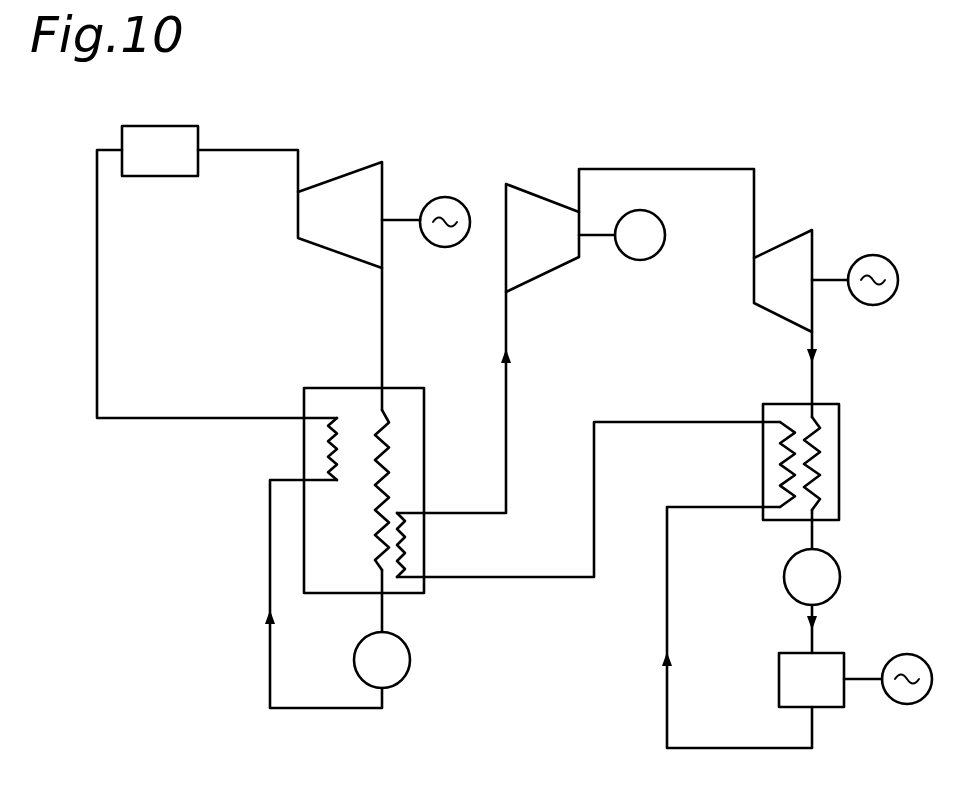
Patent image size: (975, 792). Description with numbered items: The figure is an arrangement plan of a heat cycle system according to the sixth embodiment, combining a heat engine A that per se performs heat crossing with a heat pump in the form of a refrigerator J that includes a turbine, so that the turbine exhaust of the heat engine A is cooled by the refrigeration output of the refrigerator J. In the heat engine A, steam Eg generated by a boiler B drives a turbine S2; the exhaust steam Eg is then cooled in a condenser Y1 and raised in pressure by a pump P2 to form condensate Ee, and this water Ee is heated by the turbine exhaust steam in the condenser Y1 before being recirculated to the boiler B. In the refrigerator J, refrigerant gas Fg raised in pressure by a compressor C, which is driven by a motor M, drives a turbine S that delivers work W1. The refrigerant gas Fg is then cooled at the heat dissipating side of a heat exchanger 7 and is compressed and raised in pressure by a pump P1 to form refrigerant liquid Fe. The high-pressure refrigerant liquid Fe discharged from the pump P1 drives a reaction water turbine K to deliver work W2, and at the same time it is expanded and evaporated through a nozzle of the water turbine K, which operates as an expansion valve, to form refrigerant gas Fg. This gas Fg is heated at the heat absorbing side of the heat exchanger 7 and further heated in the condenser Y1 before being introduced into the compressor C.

The heat engine A is at (285, 132).
The refrigerator J is at (680, 149).
The boiler B is at (160, 151).
The steam Eg is at (248, 154).
The turbine S2 is at (340, 215).
The condenser Y1 is at (424, 458).
The water (feedwater or condensate) Ee is at (302, 594).
The pump P2 is at (382, 660).
The compressor C is at (542, 238).
The motor M is at (640, 235).
The refrigerant gas Fg is at (607, 441).
The turbine S is at (783, 281).
The work (output) W1 is at (855, 271).
The heat exchanger 7 is at (839, 463).
The pump P1 is at (812, 577).
The refrigerant liquid Fe is at (793, 629).
The water turbine K is at (811, 680).
The work (output) W2 is at (888, 674).